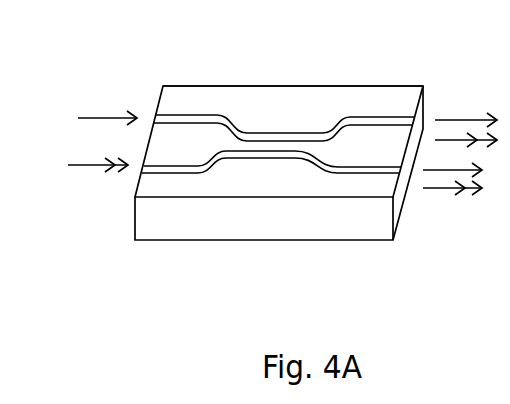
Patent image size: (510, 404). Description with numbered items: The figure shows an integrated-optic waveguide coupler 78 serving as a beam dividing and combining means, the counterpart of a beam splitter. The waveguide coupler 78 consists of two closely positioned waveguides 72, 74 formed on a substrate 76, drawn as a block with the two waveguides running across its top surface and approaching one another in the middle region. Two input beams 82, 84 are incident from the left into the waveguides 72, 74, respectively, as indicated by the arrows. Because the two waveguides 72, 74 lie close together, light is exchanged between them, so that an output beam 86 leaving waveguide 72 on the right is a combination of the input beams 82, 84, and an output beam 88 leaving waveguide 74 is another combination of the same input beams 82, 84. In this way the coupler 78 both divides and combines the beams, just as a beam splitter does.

The waveguide 72 is at (235, 128).
The waveguide 74 is at (226, 163).
The substrate 76 is at (302, 86).
The integrated-optic waveguide coupler 78 is at (242, 250).
The input beam 82 is at (97, 117).
The input beam 84 is at (76, 164).
The output beam 86 is at (461, 120).
The output beam 88 is at (430, 189).